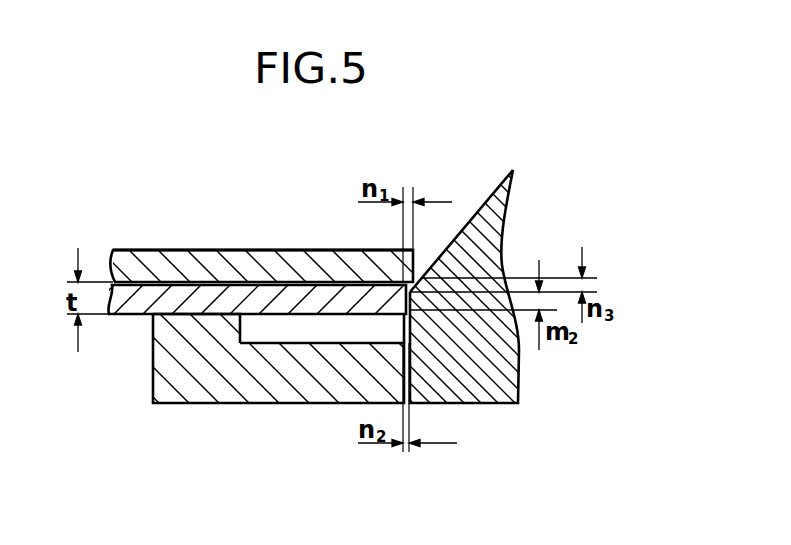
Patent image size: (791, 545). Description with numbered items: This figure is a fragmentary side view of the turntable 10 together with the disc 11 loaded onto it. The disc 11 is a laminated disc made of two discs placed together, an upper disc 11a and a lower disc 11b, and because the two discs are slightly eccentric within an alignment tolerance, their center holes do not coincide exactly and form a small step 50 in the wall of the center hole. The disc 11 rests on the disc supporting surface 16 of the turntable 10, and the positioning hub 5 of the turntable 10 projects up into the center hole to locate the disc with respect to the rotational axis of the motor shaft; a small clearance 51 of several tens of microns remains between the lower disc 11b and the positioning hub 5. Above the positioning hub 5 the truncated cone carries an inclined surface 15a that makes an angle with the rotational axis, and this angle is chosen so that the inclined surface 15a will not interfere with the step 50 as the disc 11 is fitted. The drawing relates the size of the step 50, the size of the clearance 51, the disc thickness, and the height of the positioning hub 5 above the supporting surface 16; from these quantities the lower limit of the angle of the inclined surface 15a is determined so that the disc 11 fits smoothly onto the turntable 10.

The positioning hub 5 is at (415, 325).
The turntable 10 is at (280, 403).
The disc 11 is at (245, 262).
The upper disc 11a is at (168, 257).
The lower disc 11b is at (140, 305).
The inclined surface 15a is at (480, 207).
The disc supporting surface 16 is at (188, 320).
The step 50 is at (410, 187).
The clearance 51 is at (409, 452).